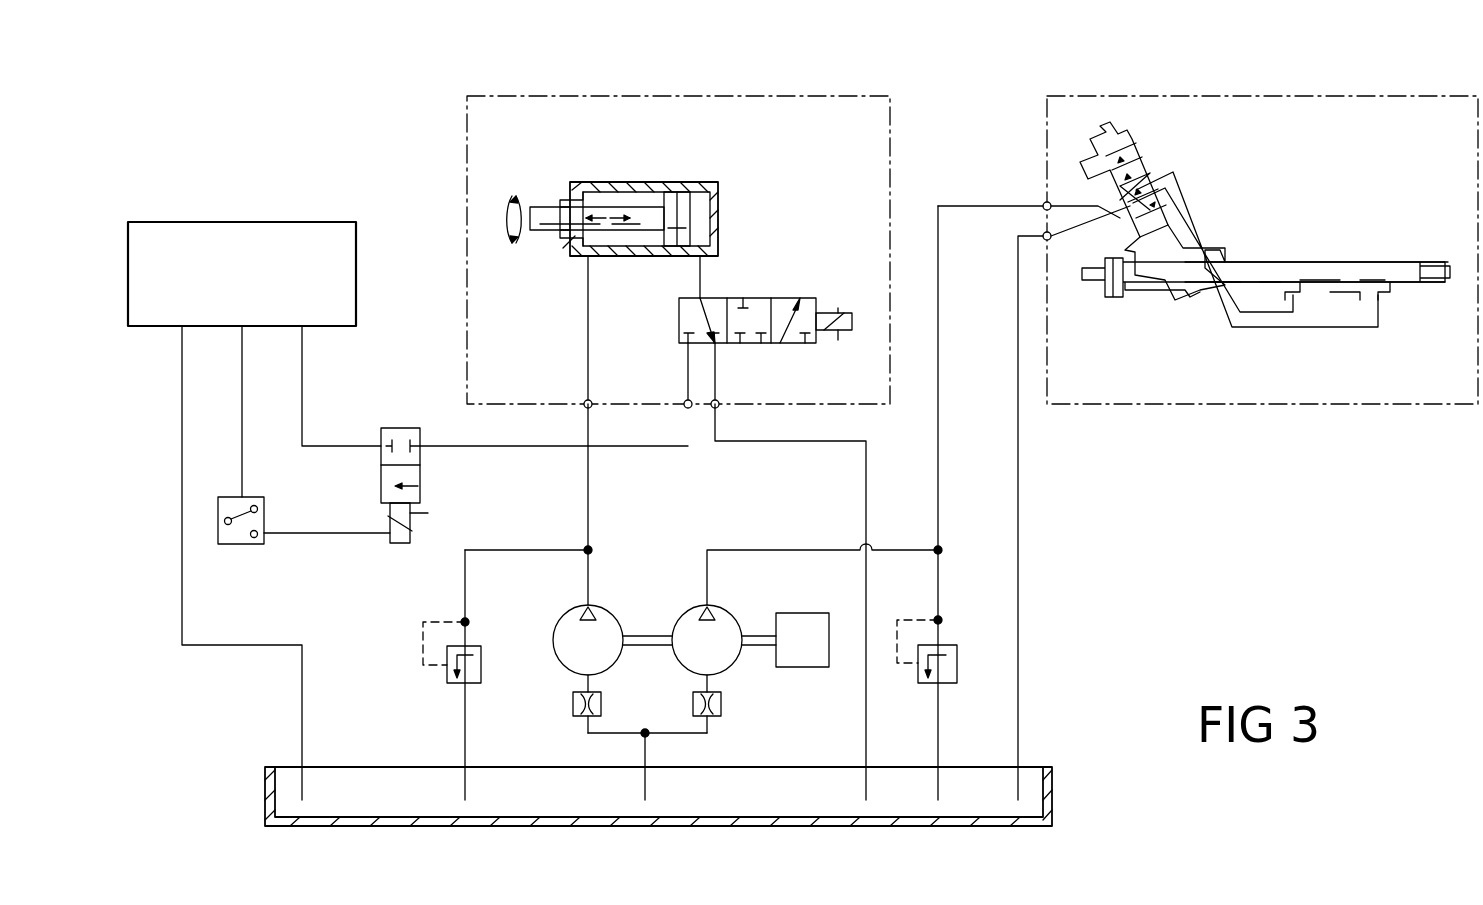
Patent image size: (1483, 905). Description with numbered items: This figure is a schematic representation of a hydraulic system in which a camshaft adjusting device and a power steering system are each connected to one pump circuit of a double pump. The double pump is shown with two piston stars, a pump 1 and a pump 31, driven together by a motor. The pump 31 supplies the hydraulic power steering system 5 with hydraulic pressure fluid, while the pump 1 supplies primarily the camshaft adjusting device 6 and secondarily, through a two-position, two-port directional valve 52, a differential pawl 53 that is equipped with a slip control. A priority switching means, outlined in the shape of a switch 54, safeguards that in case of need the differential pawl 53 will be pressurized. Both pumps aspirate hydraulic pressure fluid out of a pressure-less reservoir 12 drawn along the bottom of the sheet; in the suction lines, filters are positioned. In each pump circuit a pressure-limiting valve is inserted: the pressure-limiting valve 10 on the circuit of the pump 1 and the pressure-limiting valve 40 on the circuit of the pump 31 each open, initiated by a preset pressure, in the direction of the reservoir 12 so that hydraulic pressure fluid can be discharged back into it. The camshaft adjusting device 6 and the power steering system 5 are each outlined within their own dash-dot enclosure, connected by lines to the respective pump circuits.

The pump 1 is at (565, 621).
The hydraulic power steering system 5 is at (1272, 247).
The camshaft adjusting device 6 is at (752, 247).
The pressure-limiting valve 10 is at (481, 666).
The reservoir 12 is at (265, 788).
The pump 31 is at (684, 621).
The pressure-limiting valve 40 is at (957, 664).
The 2/2-way valve 52 is at (402, 428).
The differential pawl 53 is at (244, 232).
The switch 54 is at (242, 544).